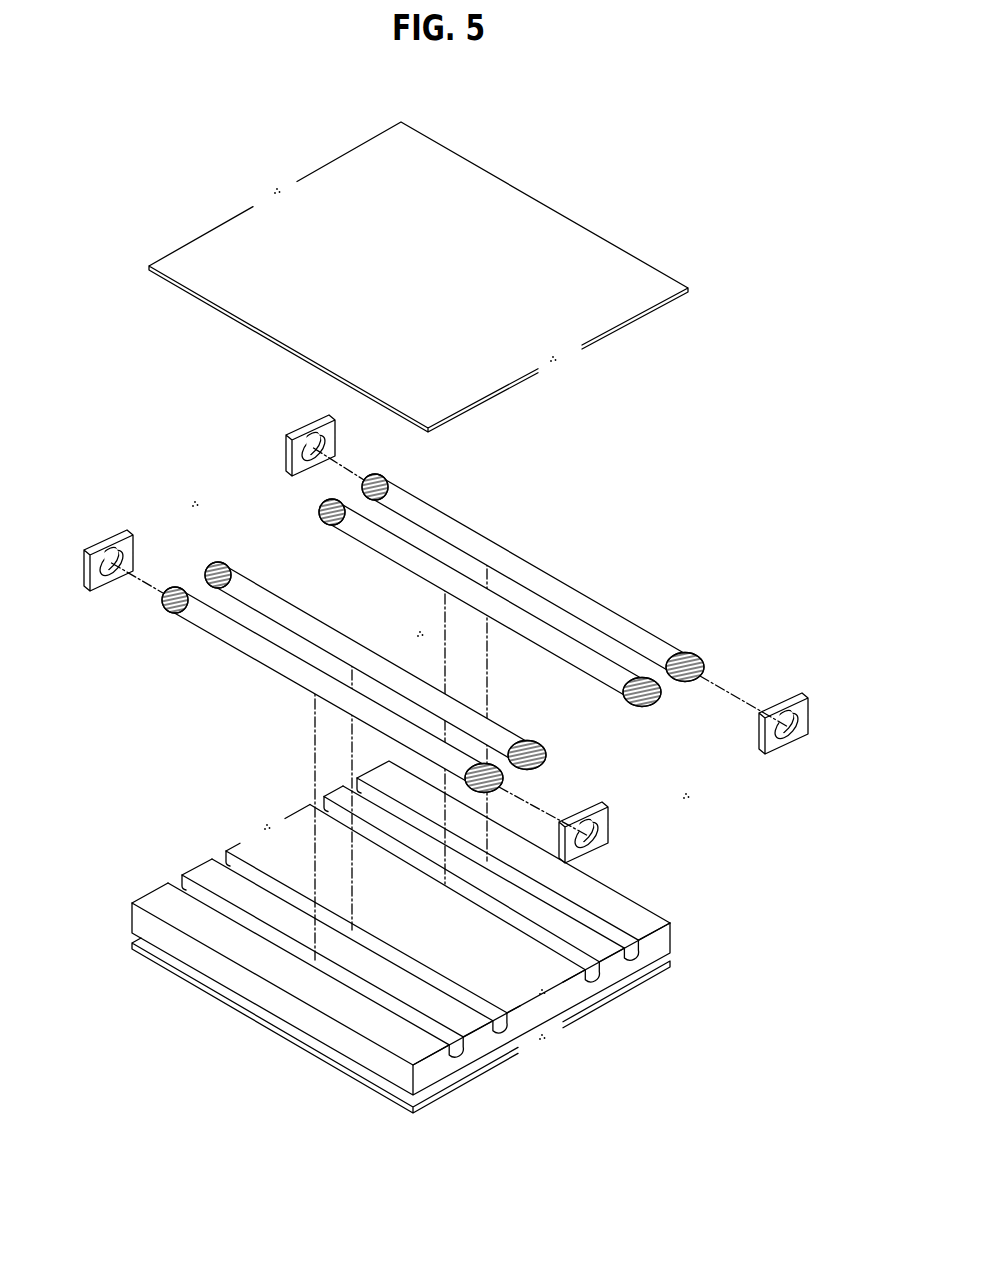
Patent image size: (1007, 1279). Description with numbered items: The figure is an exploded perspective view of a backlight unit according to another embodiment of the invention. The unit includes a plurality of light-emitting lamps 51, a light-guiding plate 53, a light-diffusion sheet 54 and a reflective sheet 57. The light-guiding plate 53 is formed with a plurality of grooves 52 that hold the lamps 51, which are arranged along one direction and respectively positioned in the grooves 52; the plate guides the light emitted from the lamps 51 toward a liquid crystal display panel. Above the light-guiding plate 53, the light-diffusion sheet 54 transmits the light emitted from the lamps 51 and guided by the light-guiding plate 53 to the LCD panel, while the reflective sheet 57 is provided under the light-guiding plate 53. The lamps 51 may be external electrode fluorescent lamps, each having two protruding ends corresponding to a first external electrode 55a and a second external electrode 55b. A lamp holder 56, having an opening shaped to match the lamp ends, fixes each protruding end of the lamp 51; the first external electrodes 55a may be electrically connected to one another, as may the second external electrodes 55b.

The light-emitting lamp 51 is at (245, 645).
The groove 52 is at (632, 960).
The light-guiding plate 53 is at (260, 990).
The light-diffusion sheet 54 is at (600, 318).
The first external electrode 55a is at (162, 608).
The second external electrode 55b is at (547, 757).
The lamp holder 56 is at (780, 743).
The reflective sheet 57 is at (580, 1008).